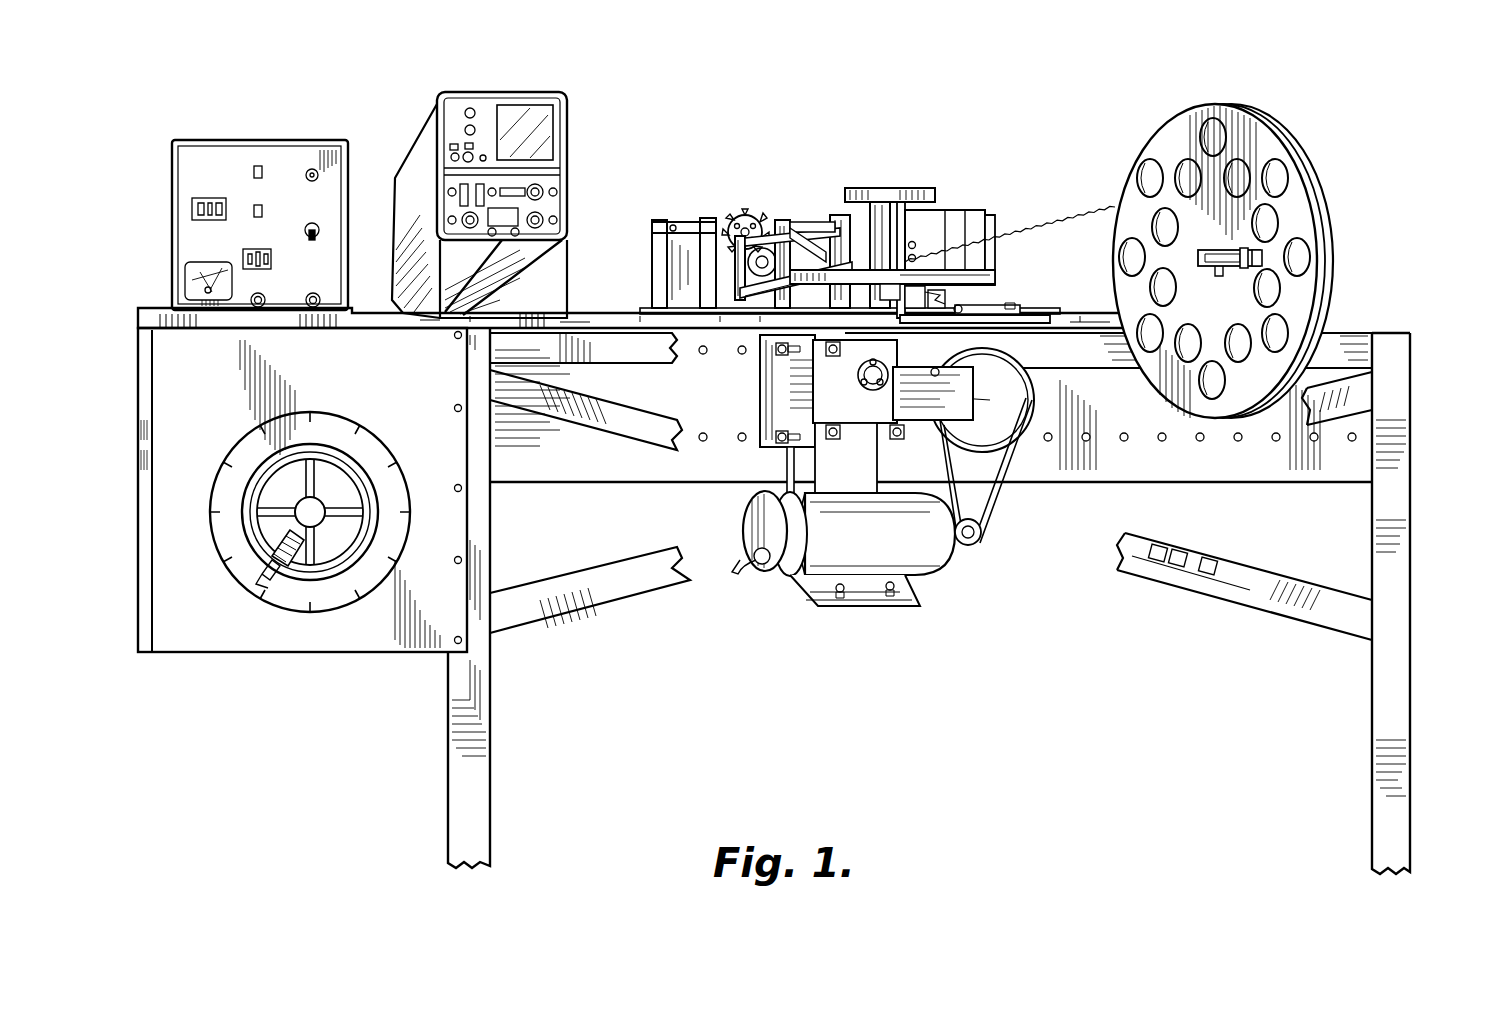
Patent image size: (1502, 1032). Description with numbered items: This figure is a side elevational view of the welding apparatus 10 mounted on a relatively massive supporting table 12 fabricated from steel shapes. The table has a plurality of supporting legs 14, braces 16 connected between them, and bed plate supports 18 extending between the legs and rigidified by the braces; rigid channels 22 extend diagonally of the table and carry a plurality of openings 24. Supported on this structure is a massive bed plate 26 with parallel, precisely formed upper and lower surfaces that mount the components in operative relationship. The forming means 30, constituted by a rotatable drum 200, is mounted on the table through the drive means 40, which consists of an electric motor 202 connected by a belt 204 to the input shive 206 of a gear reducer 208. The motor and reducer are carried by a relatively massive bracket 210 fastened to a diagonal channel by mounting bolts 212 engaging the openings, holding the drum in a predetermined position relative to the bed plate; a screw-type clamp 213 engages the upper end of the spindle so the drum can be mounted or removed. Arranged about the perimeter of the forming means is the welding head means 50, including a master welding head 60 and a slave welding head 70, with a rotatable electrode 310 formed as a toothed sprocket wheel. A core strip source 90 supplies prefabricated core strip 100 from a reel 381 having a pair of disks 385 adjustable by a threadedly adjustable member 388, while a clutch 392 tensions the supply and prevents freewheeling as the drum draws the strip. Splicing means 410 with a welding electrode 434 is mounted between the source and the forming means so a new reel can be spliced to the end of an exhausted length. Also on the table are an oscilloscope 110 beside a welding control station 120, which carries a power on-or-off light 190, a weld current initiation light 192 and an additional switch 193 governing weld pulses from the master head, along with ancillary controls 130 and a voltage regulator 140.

The welding apparatus 10 is at (948, 602).
The supporting table 12 is at (1412, 530).
The supporting legs 14 is at (462, 782).
The braces 16 is at (610, 597).
The bed plate supports 18 is at (1350, 338).
The rigid channels 22 is at (1265, 465).
The openings 24 is at (740, 354).
The bed plate 26 is at (604, 322).
The forming means 30 is at (966, 200).
The drive means 40 is at (908, 479).
The welding head means 50 is at (838, 227).
The master welding head 60 is at (742, 212).
The slave welding head 70 is at (664, 220).
The core strip source 90 is at (1231, 259).
The core strip 100 is at (1046, 220).
The oscilloscope 110 is at (572, 118).
The welding control station 120 is at (270, 223).
The ancillary controls 130 is at (268, 326).
The voltage regulator 140 is at (290, 632).
The power on-or-off light 190 is at (312, 306).
The weld current initiation light 192 is at (250, 306).
The additional switch 193 is at (316, 230).
The drum 200 is at (942, 220).
The electric motor 202 is at (833, 548).
The belt 204 is at (1000, 490).
The input shive 206 is at (1040, 412).
The gear reducer 208 is at (790, 487).
The bracket 210 is at (788, 402).
The mounting bolts 212 is at (776, 363).
The screw-type clamp 213 is at (910, 190).
The rotatable electrode 310 is at (808, 240).
The reel 381 is at (1333, 195).
The disks 385 is at (1312, 150).
The threadedly adjustable member 388 is at (1198, 258).
The clutch 392 is at (1262, 262).
The splicing means 410 is at (986, 298).
The welding electrode 434 is at (1188, 578).